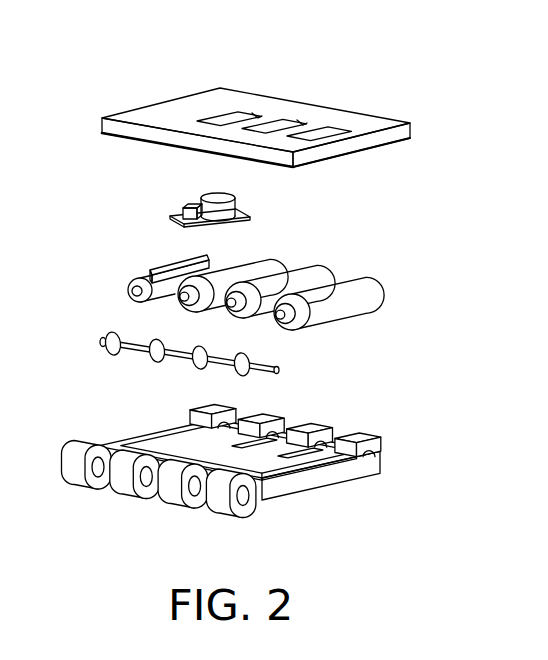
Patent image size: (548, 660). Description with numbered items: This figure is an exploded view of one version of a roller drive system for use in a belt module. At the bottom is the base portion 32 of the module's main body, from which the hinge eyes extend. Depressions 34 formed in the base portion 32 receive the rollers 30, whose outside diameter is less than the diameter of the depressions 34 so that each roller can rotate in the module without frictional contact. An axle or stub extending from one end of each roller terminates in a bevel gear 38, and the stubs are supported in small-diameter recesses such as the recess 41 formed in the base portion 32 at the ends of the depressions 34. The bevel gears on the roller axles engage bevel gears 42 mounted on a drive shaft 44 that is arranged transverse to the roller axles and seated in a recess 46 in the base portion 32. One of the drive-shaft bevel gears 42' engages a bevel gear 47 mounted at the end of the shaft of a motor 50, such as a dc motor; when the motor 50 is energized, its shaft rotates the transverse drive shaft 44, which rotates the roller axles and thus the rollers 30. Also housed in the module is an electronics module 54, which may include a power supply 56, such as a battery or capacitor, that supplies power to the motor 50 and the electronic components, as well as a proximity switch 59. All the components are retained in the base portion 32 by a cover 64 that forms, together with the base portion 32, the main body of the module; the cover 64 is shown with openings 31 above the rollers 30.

The cover 64 is at (172, 112).
The slots in cover plate 31 is at (343, 132).
The proximity switch 59 is at (182, 208).
The power supply 56 is at (232, 207).
The electronics module 54 is at (223, 220).
The motor 50 is at (170, 270).
The bevel gear 47 is at (135, 278).
The bevel gear 38 is at (190, 310).
The rollers 30 is at (347, 313).
The drive-shaft bevel gear 42' is at (84, 319).
The bevel gears 42 is at (189, 365).
The drive shaft 44 is at (128, 348).
The depressions 34 is at (308, 463).
The small-diameter recess 41 is at (340, 475).
The base portion 32 is at (243, 473).
The recess 46 is at (267, 482).